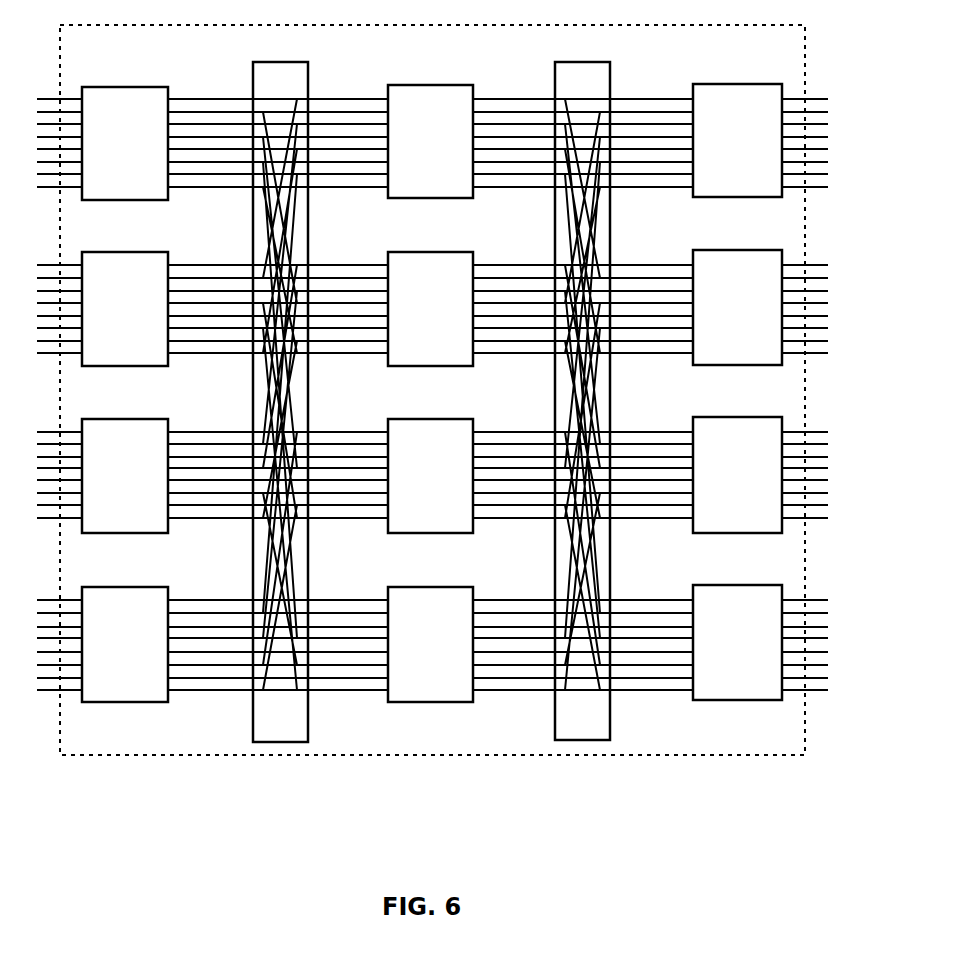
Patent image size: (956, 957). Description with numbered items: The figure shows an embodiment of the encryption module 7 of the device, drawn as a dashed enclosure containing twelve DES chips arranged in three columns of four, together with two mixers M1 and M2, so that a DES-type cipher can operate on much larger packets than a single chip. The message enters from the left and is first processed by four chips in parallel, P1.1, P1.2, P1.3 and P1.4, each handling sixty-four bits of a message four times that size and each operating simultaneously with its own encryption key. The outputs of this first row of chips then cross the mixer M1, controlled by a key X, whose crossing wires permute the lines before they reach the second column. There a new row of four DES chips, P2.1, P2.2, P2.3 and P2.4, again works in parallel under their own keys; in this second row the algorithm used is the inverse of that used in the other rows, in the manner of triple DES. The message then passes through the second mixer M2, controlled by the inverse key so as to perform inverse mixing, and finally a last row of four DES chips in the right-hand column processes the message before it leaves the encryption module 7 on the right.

The encryption module 7 is at (640, 757).
The mixer M1 is at (281, 62).
The mixer M2 is at (583, 62).
The DES chip P1.1 is at (122, 87).
The DES chip P1.2 is at (122, 252).
The DES chip P1.3 is at (122, 419).
The DES chip P1.4 is at (122, 587).
The DES chip P2.1 is at (431, 85).
The DES chip P2.2 is at (431, 252).
The DES chip P2.3 is at (431, 419).
The DES chip P2.4 is at (431, 587).